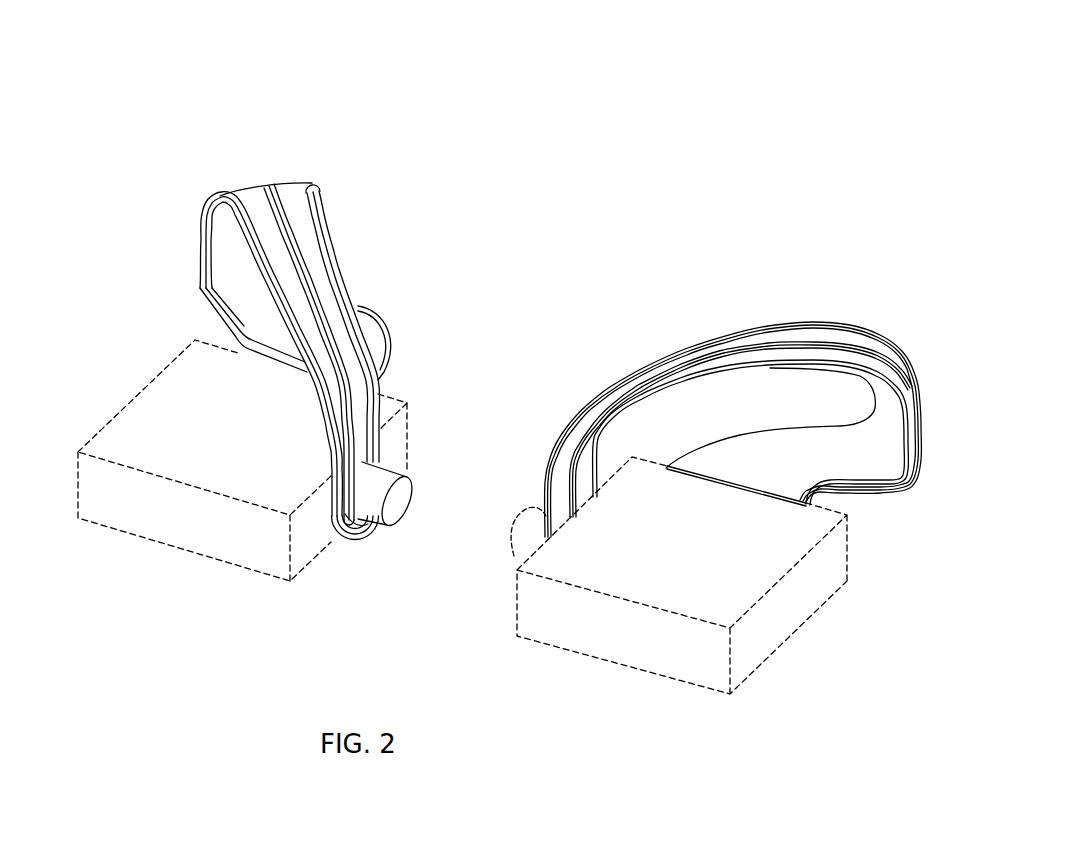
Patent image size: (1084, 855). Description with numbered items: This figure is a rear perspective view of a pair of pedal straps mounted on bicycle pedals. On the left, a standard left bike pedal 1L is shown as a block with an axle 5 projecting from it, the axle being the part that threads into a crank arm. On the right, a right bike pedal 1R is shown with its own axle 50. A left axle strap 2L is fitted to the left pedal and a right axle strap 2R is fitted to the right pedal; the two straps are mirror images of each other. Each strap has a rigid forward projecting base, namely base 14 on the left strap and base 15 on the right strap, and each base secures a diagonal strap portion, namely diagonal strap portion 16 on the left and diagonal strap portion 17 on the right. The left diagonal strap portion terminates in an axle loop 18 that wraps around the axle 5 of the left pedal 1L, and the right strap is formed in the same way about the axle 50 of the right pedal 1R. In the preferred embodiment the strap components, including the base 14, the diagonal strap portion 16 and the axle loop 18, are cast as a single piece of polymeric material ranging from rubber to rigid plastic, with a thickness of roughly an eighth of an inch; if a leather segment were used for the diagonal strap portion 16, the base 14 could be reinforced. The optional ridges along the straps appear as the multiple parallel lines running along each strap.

The left axle strap 2L is at (377, 418).
The right axle strap 2R is at (733, 333).
The diagonal strap portion 16 is at (307, 258).
The rigid forward projecting base 14 is at (374, 347).
The axle 5 is at (398, 500).
The axle loop 18 is at (361, 533).
The diagonal strap portion 17 is at (869, 358).
The rigid forward projecting base 15 is at (832, 471).
The axle 50 is at (517, 520).
The left bike pedal 1L is at (213, 442).
The right bike pedal 1R is at (686, 575).